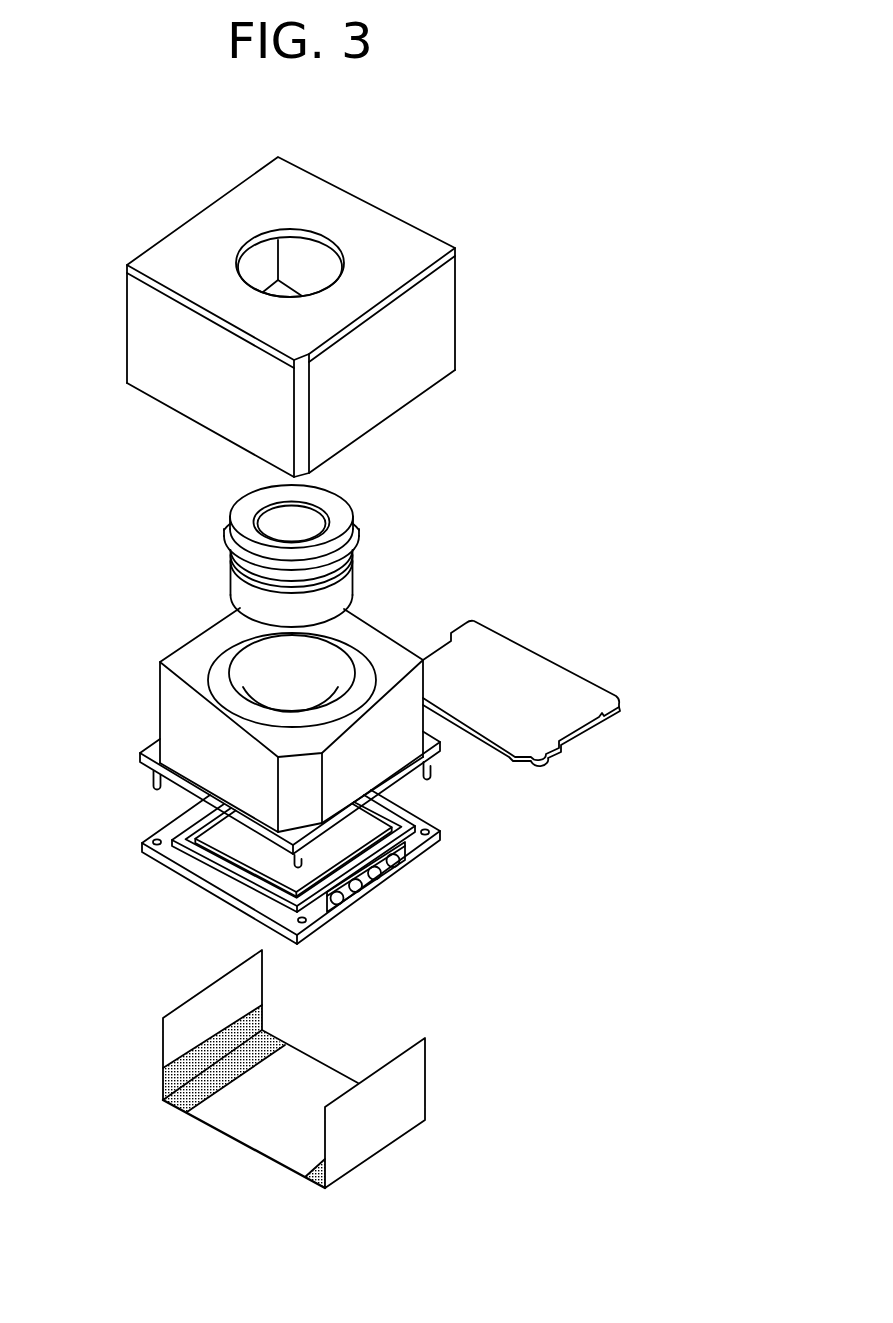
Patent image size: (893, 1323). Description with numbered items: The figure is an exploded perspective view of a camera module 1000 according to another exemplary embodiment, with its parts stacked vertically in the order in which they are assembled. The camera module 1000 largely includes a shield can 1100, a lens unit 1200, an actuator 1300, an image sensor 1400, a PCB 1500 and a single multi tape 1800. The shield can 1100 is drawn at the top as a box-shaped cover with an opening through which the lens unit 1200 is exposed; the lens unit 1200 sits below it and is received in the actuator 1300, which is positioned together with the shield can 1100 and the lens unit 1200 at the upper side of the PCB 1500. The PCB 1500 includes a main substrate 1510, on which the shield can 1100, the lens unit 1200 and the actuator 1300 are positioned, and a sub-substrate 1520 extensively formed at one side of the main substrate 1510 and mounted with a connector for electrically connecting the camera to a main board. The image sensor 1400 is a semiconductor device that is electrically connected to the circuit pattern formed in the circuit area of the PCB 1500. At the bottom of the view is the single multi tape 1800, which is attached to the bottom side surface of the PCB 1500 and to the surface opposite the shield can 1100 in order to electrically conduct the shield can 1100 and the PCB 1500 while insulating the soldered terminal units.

The camera module 1000 is at (140, 141).
The shield can 1100 is at (393, 232).
The lens unit 1200 is at (235, 518).
The actuator 1300 is at (172, 667).
The image sensor 1400 is at (245, 858).
The PCB 1500 is at (346, 779).
The main substrate 1510 is at (413, 849).
The sub-substrate 1520 is at (552, 673).
The single multi tape 1800 is at (153, 1020).